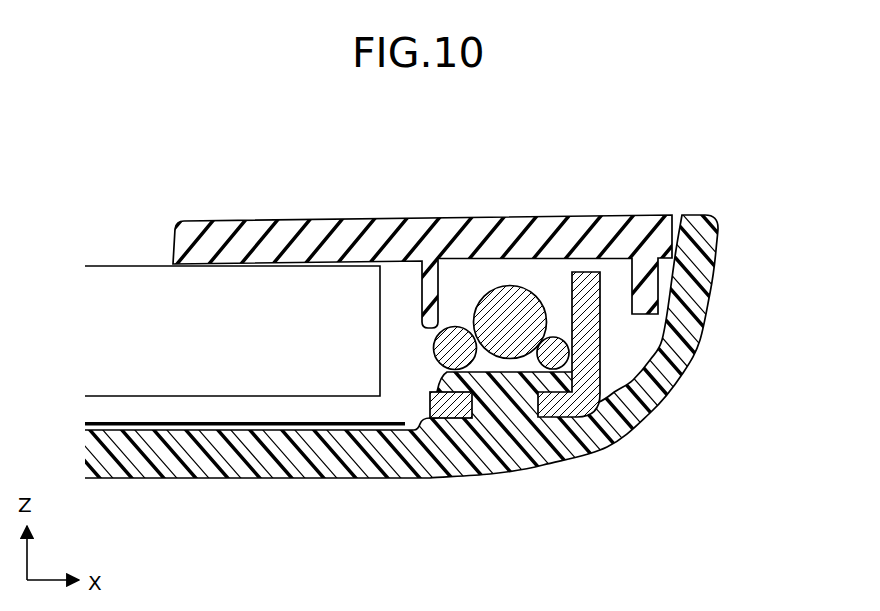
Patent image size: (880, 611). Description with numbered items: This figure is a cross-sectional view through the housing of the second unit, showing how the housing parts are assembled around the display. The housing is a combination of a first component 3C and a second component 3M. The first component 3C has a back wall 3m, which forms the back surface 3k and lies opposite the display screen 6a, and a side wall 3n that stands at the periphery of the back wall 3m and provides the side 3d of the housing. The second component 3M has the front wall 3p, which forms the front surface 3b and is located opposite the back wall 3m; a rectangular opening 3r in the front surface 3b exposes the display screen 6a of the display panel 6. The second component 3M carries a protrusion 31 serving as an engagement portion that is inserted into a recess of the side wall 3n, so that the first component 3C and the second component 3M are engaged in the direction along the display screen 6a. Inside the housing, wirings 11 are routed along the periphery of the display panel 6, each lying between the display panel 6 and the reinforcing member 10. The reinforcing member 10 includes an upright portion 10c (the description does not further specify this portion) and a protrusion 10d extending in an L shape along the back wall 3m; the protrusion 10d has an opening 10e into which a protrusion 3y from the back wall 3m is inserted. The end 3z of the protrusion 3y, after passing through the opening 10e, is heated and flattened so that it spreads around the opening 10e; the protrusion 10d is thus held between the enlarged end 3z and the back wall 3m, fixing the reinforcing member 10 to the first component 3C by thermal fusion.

The side 3d is at (440, 350).
The side wall 3n is at (697, 332).
The back surface 3k is at (123, 480).
The back wall 3m is at (178, 468).
The first component 3C is at (228, 481).
The protrusion 3y is at (505, 397).
The protrusion 31 is at (643, 305).
The front surface 3b is at (260, 220).
The opening 3r is at (174, 249).
The second component 3M is at (225, 219).
The front wall 3p is at (317, 240).
The display panel 6 is at (282, 406).
The display screen 6a is at (122, 266).
The wirings 11 is at (555, 345).
The reinforcing member 10 is at (541, 336).
The vertical portion of rotary member 10c is at (585, 277).
The protrusion 10d is at (455, 408).
The opening 10e is at (550, 388).
The end 3z is at (582, 388).